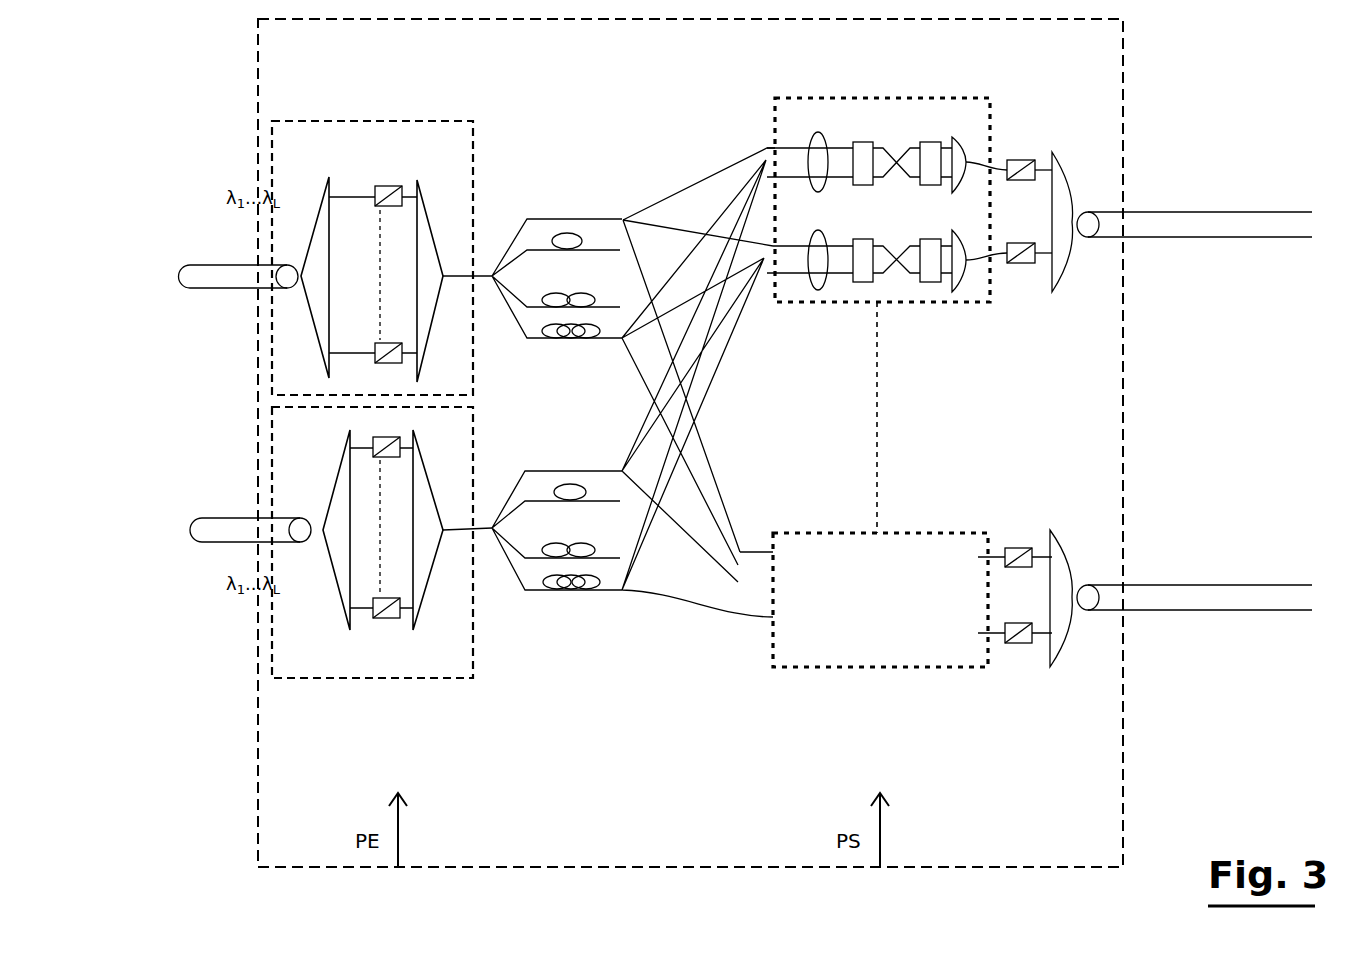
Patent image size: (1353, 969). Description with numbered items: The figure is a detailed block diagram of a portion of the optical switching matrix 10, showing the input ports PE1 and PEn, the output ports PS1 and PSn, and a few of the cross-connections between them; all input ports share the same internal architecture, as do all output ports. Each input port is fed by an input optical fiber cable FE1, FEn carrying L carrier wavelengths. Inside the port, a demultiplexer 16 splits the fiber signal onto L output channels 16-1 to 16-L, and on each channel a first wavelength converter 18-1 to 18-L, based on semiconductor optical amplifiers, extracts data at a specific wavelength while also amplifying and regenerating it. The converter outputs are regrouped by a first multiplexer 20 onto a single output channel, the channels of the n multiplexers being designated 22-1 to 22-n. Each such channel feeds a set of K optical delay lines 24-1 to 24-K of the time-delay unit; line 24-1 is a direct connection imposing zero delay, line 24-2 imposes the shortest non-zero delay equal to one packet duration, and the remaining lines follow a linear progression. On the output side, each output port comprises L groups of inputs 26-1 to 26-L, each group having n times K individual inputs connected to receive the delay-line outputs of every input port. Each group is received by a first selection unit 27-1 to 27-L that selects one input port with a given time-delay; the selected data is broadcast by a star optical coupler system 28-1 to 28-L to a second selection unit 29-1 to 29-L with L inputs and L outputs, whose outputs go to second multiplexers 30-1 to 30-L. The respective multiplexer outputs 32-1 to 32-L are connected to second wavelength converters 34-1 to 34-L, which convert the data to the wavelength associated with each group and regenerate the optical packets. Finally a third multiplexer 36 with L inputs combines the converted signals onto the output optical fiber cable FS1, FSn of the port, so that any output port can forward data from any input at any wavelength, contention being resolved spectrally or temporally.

The switching matrix 10 is at (553, 57).
The demultiplexer 16 is at (338, 452).
The first output channel of demultiplexer 16-1 is at (332, 190).
The L-th output channel of demultiplexer 16-L is at (340, 353).
The first wavelength converter 18-1 is at (385, 178).
The first wavelength converter 18-L is at (385, 342).
The first multiplexer 20 is at (438, 200).
The output channel of first multiplexer 22-1 is at (462, 295).
The output channel of first multiplexer 22-n is at (490, 522).
The optical delay line 24-1 is at (493, 262).
The optical delay line 24-2 is at (567, 232).
The optical delay line 24-K is at (577, 342).
The group of inputs 26-1 is at (818, 132).
The group of inputs 26-L is at (818, 290).
The first selection unit 27-1 is at (862, 141).
The first selection unit 27-L is at (862, 283).
The star optical coupler system 28-1 is at (896, 168).
The star optical coupler system 28-L is at (896, 300).
The second selection unit 29-1 is at (930, 140).
The second selection unit 29-L is at (935, 284).
The second multiplexer 30-1 is at (957, 135).
The second multiplexer 30-L is at (960, 290).
The output of second multiplexer 32-1 is at (972, 165).
The output of second multiplexer 32-L is at (988, 252).
The second wavelength converter 34-1 is at (1027, 160).
The second wavelength converter 34-L is at (1020, 264).
The third multiplexer 36 is at (1060, 166).
The input port PE1 is at (272, 150).
The input port PEn is at (325, 679).
The output port PS1 is at (962, 98).
The output port PSn is at (950, 668).
The input optical fiber cable FE1 is at (190, 262).
The input optical fiber cable FEn is at (210, 543).
The output optical fiber cable FS1 is at (1252, 212).
The output optical fiber cable FSn is at (1252, 585).